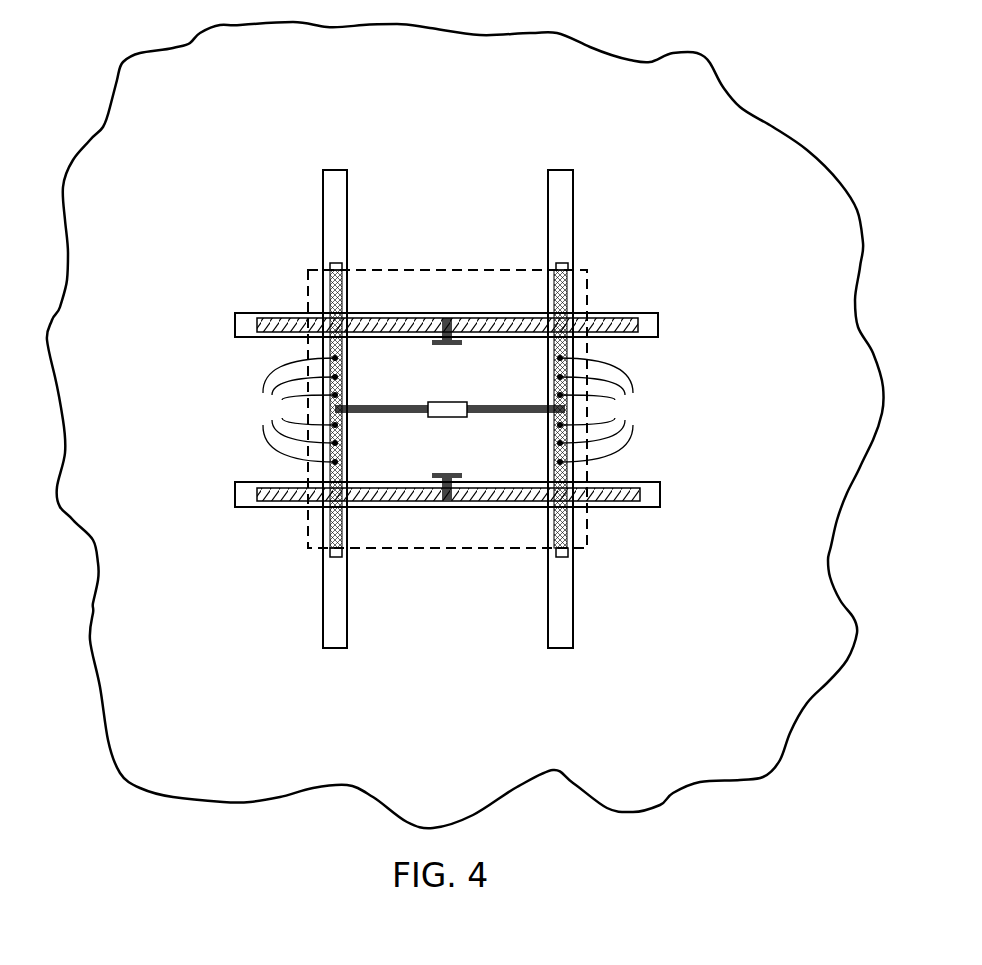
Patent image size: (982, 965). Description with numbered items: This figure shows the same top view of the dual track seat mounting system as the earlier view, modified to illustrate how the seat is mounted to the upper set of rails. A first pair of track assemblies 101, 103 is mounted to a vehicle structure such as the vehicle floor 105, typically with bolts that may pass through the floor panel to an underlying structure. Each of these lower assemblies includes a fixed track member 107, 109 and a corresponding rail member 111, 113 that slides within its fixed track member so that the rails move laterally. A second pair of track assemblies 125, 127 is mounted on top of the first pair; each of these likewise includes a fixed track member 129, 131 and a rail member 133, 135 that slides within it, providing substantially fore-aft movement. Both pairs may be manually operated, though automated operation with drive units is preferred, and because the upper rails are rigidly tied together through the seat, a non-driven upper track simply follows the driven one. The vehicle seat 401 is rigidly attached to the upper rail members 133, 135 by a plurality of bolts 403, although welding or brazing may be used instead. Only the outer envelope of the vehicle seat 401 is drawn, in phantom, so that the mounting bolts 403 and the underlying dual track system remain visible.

The first track assembly 101 is at (650, 301).
The first-pair track assembly 103 is at (678, 484).
The vehicle floor 105 is at (483, 80).
The fixed track member 107 is at (650, 337).
The fixed track member 109 is at (648, 507).
The rail member 111 is at (608, 318).
The rail member 113 is at (604, 501).
The second-pair track assembly 125 is at (358, 207).
The second-pair track assembly 127 is at (543, 208).
The fixed track member 129 is at (331, 170).
The fixed track member 131 is at (560, 170).
The upper rail member 133 is at (334, 263).
The upper rail member 135 is at (562, 263).
The vehicle seat 401 is at (412, 270).
The mounting bolts 403 is at (446, 410).